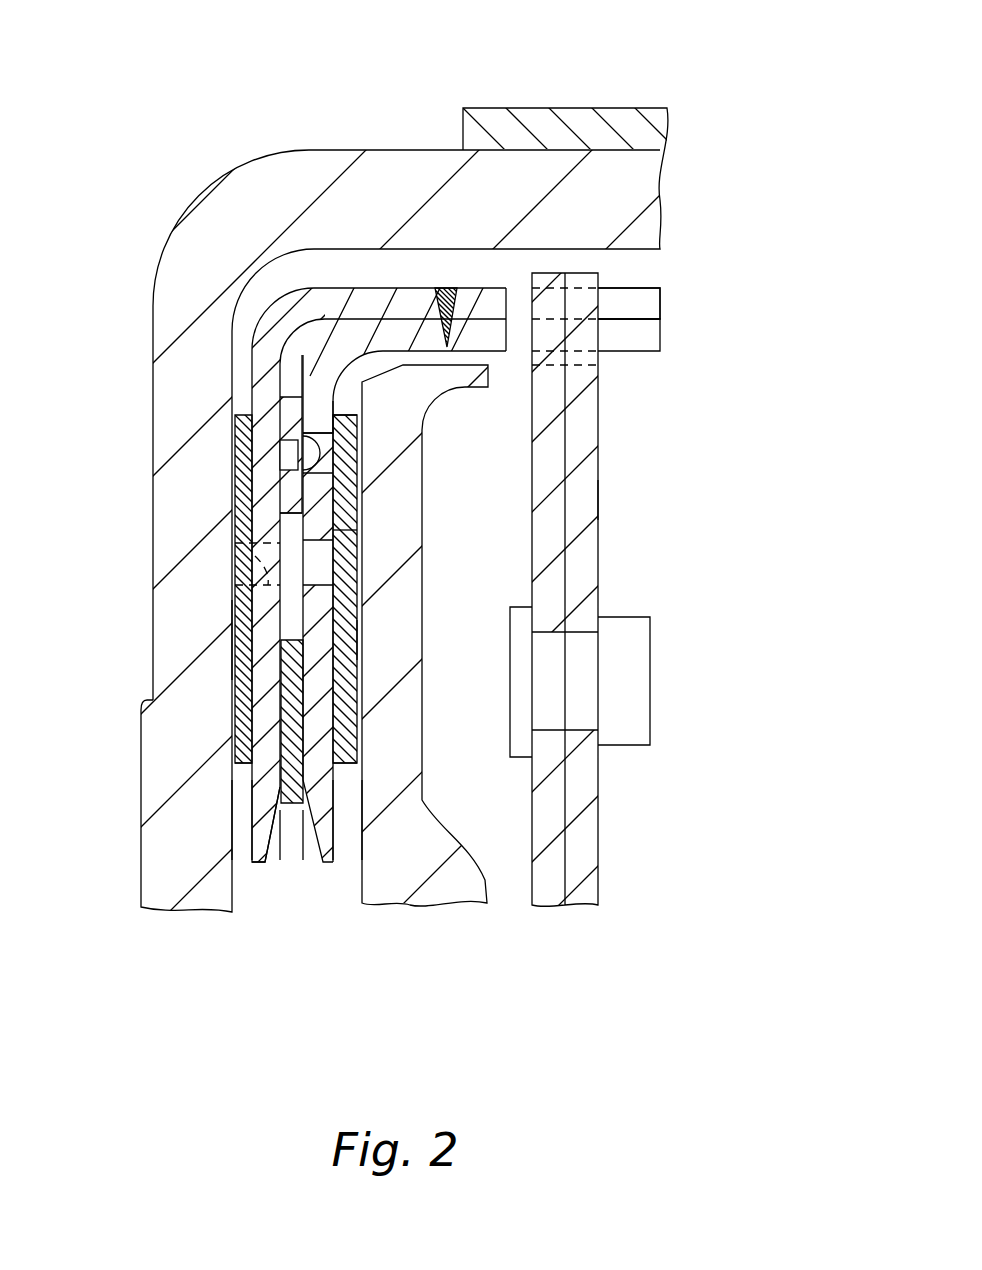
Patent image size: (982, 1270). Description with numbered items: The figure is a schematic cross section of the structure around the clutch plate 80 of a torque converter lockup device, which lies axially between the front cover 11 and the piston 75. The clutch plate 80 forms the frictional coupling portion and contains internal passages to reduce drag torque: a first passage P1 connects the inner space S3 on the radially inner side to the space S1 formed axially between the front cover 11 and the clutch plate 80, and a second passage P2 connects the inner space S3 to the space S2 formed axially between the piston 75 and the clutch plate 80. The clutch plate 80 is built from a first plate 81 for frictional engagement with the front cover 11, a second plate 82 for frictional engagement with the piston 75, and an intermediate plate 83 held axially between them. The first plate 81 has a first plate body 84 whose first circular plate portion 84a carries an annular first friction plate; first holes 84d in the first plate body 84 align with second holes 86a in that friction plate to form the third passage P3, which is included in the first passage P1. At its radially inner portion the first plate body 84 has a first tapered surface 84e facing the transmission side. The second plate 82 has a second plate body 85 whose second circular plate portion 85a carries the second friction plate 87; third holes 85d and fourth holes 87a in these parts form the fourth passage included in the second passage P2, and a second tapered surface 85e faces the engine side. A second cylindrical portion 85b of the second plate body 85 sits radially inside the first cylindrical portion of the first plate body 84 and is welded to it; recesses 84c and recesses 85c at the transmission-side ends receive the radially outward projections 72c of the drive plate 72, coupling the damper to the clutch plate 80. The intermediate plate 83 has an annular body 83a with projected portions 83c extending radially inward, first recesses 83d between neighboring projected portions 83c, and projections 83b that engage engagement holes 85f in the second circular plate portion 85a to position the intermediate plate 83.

The front cover 11 is at (262, 148).
The clutch plate 80 is at (337, 287).
The first plate 81 is at (287, 292).
The second plate 82 is at (310, 346).
The intermediate plate 83 is at (275, 403).
The annular body 83a is at (289, 428).
The projections 83b is at (318, 455).
The projected portions 83c is at (232, 740).
The first recesses 83d is at (283, 512).
The first plate body 84 is at (644, 281).
The first circular plate portion 84a is at (404, 300).
The recesses 84c is at (515, 290).
The first holes 84d is at (232, 552).
The first tapered surface 84e is at (280, 846).
The second plate body 85 is at (665, 359).
The second circular plate portion 85a is at (293, 743).
The second cylindrical portion 85b is at (483, 290).
The recesses 85c is at (507, 333).
The third holes 85d is at (349, 532).
The second tapered surface 85e is at (306, 840).
The engagement holes 85f is at (334, 430).
The second holes 86a is at (232, 570).
The second friction plate 87 is at (347, 618).
The fourth holes 87a is at (318, 580).
The drive plate 72 is at (599, 513).
The radially outward projections 72c is at (601, 344).
The piston 75 is at (455, 821).
The first passage P1 is at (232, 640).
The second passage P2 is at (601, 503).
The third passage P3 is at (352, 636).
The space S1 is at (240, 773).
The space S2 is at (357, 773).
The inner space S3 is at (298, 828).